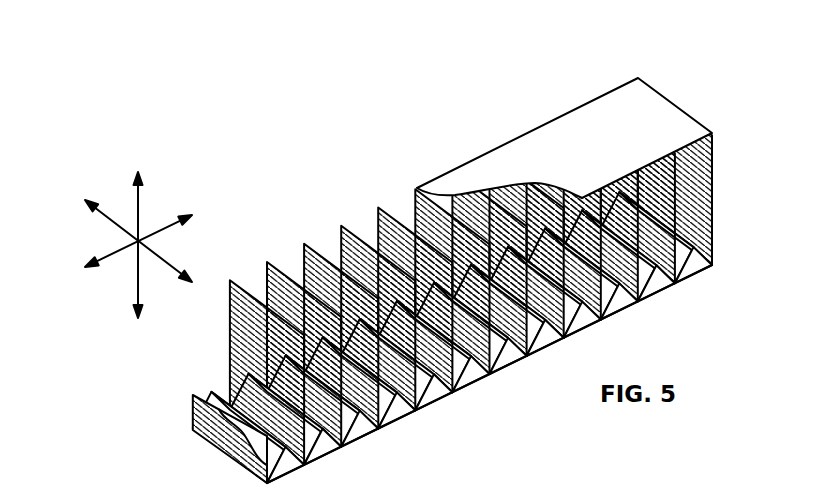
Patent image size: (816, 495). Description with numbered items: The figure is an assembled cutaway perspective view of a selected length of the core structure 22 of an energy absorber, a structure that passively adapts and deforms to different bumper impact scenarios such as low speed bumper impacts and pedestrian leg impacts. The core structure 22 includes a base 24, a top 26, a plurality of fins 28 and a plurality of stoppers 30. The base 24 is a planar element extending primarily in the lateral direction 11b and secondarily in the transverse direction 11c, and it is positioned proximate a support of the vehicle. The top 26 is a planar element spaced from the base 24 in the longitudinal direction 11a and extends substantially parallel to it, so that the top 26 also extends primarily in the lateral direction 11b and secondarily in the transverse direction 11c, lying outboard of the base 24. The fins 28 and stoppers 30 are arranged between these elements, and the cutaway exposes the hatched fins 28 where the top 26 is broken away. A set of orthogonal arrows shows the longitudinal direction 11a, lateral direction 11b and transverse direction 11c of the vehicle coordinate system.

The core structure 22 is at (450, 246).
The base 24 is at (362, 432).
The top 26 is at (624, 149).
The fins 28 is at (415, 213).
The stoppers 30 is at (215, 394).
The longitudinal direction 11a is at (135, 208).
The lateral direction 11b is at (103, 257).
The transverse direction 11c is at (177, 263).